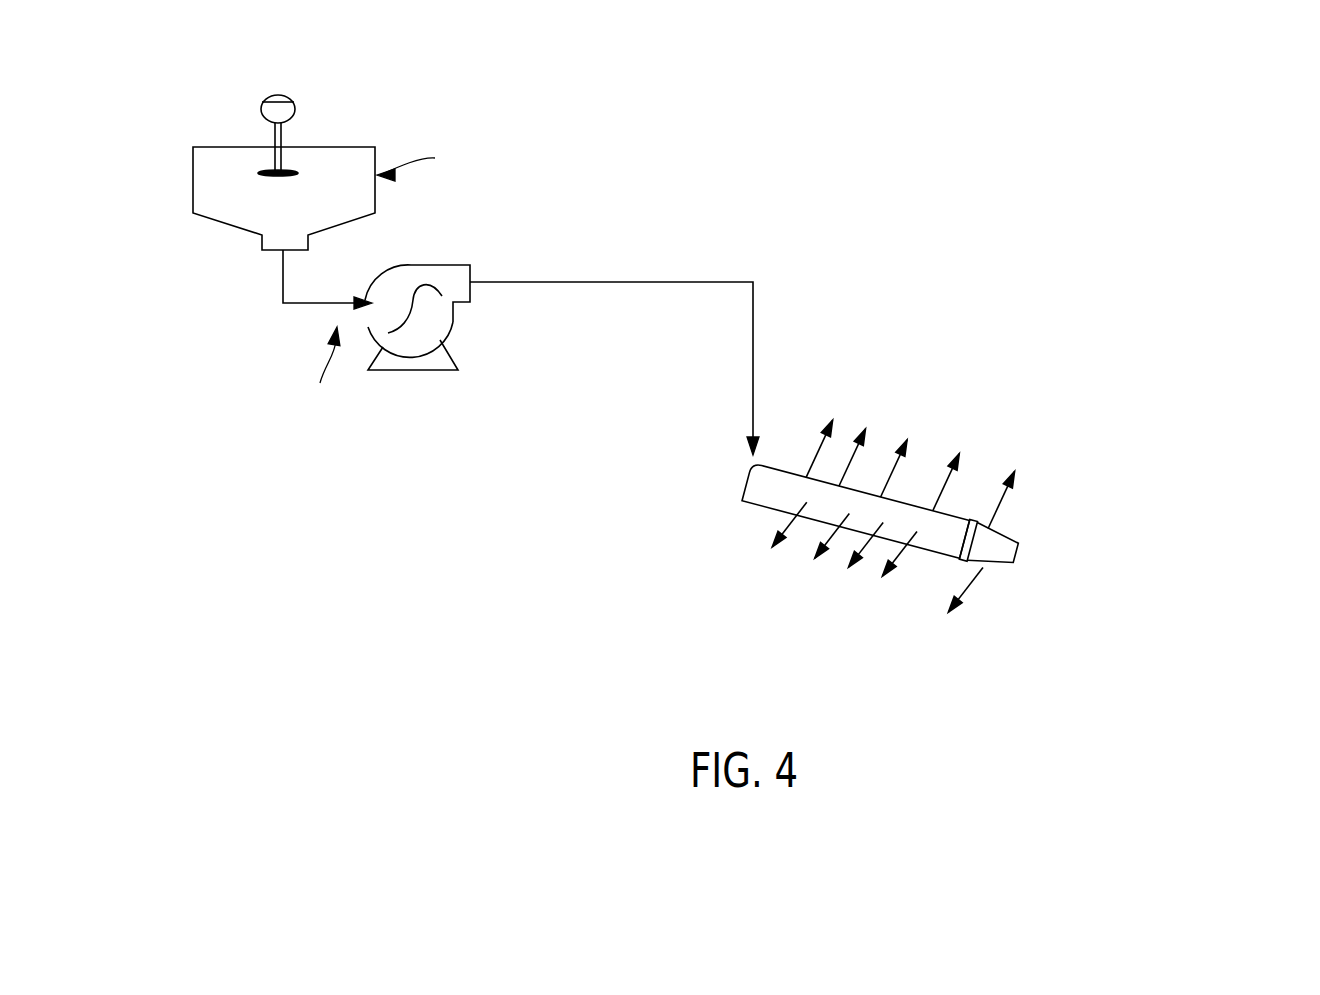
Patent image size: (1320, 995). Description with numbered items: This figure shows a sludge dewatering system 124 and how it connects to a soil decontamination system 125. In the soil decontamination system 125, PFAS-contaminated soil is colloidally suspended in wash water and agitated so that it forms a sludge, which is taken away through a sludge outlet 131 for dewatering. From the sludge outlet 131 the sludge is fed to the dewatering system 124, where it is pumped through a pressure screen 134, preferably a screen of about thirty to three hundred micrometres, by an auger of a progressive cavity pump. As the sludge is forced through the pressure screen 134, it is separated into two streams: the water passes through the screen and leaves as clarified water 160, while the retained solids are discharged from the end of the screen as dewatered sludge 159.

The soil decontamination system 125 is at (392, 113).
The dewatering system 124 is at (962, 158).
The sludge outlet 131 is at (312, 306).
The pressure screen 134 is at (931, 552).
The clarified water 160 is at (752, 602).
The dewatered sludge 159 is at (1046, 556).